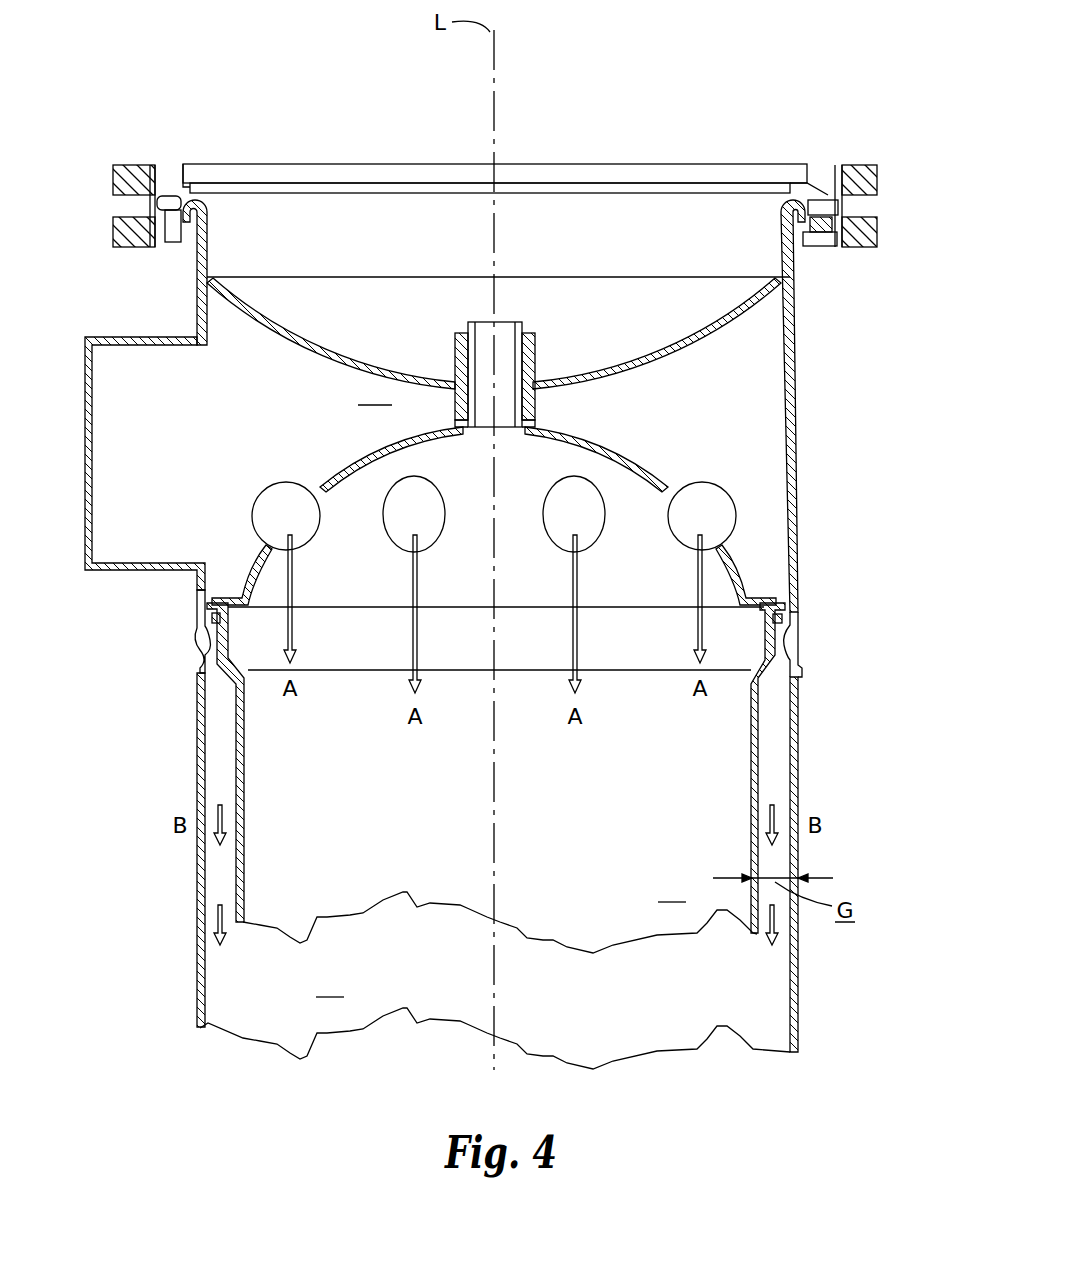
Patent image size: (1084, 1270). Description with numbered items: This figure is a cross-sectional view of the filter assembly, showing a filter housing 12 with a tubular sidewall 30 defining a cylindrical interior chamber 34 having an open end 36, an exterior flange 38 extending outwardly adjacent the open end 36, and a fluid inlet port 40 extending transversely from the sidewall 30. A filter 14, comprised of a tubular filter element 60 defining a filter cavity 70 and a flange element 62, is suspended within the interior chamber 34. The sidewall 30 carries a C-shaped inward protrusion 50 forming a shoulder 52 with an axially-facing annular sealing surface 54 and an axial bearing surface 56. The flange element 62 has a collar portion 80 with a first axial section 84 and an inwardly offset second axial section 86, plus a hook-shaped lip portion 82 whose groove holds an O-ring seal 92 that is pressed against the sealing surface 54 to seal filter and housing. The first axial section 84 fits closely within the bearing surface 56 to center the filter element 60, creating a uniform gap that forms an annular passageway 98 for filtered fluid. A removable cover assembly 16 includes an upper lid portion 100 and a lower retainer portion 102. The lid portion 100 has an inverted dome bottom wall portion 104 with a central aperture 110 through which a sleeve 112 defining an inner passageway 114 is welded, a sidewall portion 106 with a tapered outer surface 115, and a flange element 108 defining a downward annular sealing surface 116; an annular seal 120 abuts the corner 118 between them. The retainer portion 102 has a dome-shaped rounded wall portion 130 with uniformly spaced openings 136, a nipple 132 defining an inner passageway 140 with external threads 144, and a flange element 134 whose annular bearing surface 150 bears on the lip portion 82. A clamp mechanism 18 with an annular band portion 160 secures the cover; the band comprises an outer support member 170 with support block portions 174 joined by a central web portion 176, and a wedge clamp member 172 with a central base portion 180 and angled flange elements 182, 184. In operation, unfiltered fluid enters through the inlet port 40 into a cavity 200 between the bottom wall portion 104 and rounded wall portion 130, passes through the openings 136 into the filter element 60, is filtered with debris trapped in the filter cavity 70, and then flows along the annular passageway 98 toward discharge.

The filter housing 12 is at (802, 727).
The filter 14 is at (762, 795).
The cover assembly 16 is at (682, 408).
The clamp mechanism 18 is at (112, 200).
The tubular sidewall 30 is at (800, 782).
The interior chamber 34 is at (495, 980).
The open end 36 is at (186, 212).
The exterior flange 38 is at (150, 222).
The fluid inlet port 40 is at (118, 575).
The inward protrusion 50 is at (198, 665).
The shoulder 52 is at (212, 600).
The annular sealing surface 54 is at (794, 610).
The axial bearing surface 56 is at (792, 703).
The filter element 60 is at (777, 755).
The flange element 62 is at (792, 640).
The filter cavity 70 is at (745, 888).
The collar portion 80 is at (208, 645).
The lip portion 82 is at (204, 606).
The first axial section 84 is at (772, 662).
The second axial section 86 is at (757, 700).
The O-ring seal 92 is at (208, 632).
The annular passageway 98 is at (215, 868).
The upper lid portion 100 is at (785, 322).
The lower retainer portion 102 is at (712, 492).
The bottom wall portion 104 is at (650, 368).
The sidewall portion 106 is at (795, 262).
The flange element 108 is at (822, 196).
The aperture 110 is at (462, 375).
The sleeve 112 is at (532, 410).
The inner passageway 114 is at (522, 338).
The outer surface 115 is at (196, 252).
The annular sealing surface 116 is at (168, 203).
The corner 118 is at (782, 210).
The annular seal 120 is at (212, 212).
The rounded wall portion 130 is at (672, 470).
The nipple 132 is at (457, 410).
The flange element 134 is at (768, 597).
The openings 136 is at (428, 514).
The inner passageway 140 is at (488, 330).
The external threads 144 is at (468, 330).
The annular bearing surface 150 is at (772, 620).
The annular band portion 160 is at (858, 163).
The outer support member 170 is at (878, 255).
The wedge clamp member 172 is at (818, 240).
The support block portions 174 is at (880, 215).
The central web portion 176 is at (878, 230).
The central base portion 180 is at (880, 195).
The flange element 182 is at (812, 200).
The flange element 184 is at (858, 258).
The cavity 200 is at (375, 393).